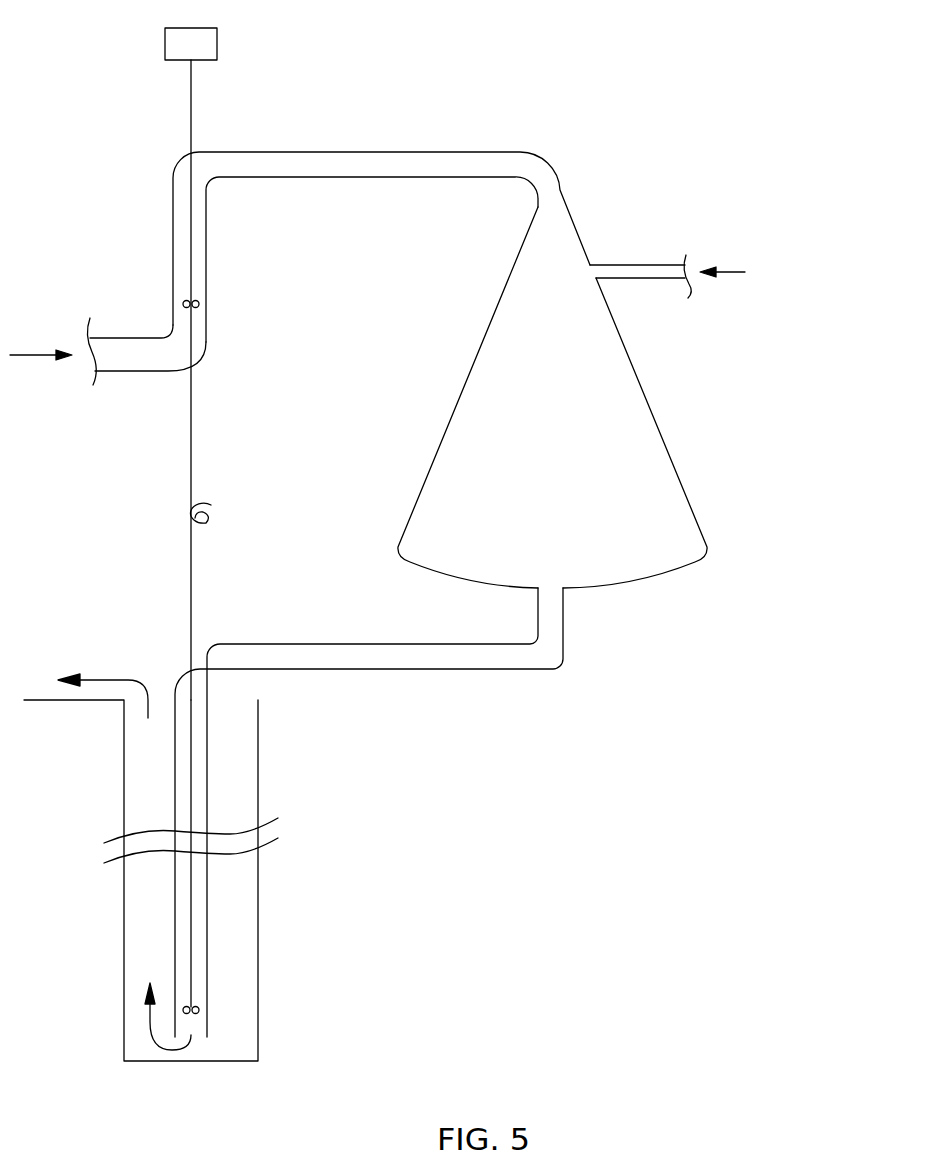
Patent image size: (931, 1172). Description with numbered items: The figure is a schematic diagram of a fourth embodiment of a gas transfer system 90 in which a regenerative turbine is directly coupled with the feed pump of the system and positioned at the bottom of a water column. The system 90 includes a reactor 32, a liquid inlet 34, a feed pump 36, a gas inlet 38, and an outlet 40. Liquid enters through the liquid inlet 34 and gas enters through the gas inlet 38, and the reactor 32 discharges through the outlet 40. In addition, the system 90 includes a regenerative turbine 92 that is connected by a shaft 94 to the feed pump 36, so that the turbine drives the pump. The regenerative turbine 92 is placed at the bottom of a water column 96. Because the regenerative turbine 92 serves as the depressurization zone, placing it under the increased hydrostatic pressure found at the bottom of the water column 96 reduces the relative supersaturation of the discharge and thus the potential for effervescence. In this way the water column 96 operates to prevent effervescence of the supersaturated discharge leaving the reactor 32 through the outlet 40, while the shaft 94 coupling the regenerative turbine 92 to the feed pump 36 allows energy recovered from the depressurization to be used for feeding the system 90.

The reactor 32 is at (655, 418).
The liquid inlet 34 is at (430, 152).
The feed pump 36 is at (217, 43).
The gas inlet 38 is at (640, 278).
The outlet 40 is at (442, 669).
The gas transfer system 90 is at (735, 477).
The regenerative turbine 92 is at (192, 756).
The shaft 94 is at (191, 475).
The water column 96 is at (258, 918).